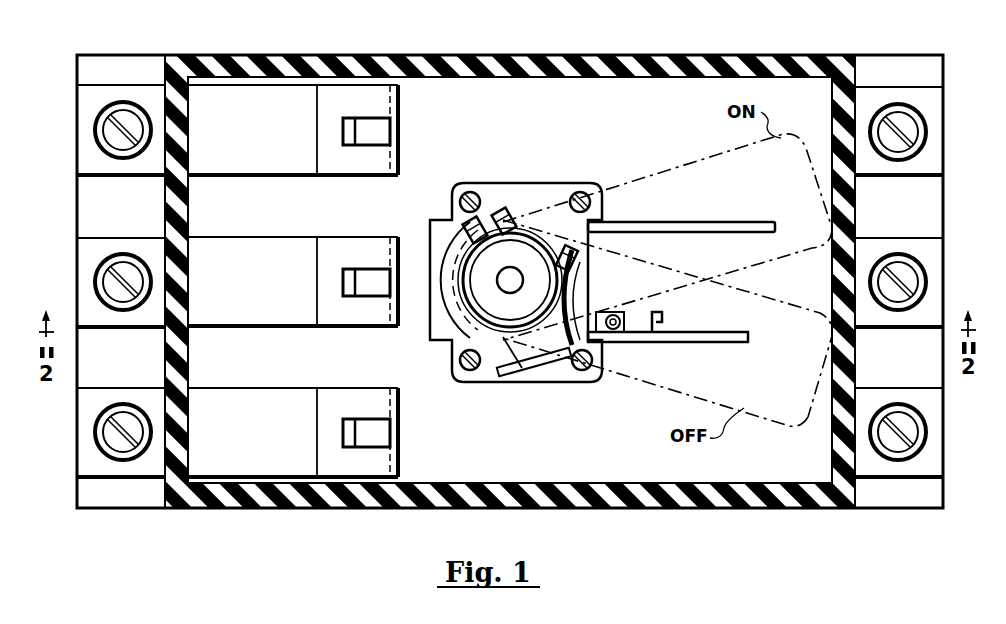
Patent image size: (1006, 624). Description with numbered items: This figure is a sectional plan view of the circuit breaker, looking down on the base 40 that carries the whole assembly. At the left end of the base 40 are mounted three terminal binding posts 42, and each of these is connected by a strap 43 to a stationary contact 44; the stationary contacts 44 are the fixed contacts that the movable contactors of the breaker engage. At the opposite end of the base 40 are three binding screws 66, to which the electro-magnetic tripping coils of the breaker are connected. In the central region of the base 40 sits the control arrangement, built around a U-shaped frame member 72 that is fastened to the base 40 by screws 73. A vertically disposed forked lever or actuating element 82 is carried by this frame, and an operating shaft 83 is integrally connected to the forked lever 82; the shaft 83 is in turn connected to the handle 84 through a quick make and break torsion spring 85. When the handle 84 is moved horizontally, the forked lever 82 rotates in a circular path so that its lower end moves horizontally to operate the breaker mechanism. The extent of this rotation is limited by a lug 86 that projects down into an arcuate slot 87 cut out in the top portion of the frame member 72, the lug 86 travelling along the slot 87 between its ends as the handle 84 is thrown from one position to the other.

The base 40 is at (135, 55).
The terminal binding posts 42 is at (100, 143).
The straps 43 is at (327, 170).
The stationary contacts 44 is at (385, 128).
The binding screws 66 is at (920, 123).
The U-shaped frame member 72 is at (722, 230).
The screws 73 is at (465, 182).
The forked lever 82 is at (504, 378).
The operating shaft 83 is at (508, 268).
The handle 84 is at (776, 422).
The quick make and break torsion spring 85 is at (527, 238).
The lug 86 is at (578, 258).
The arcuate slot 87 is at (572, 292).